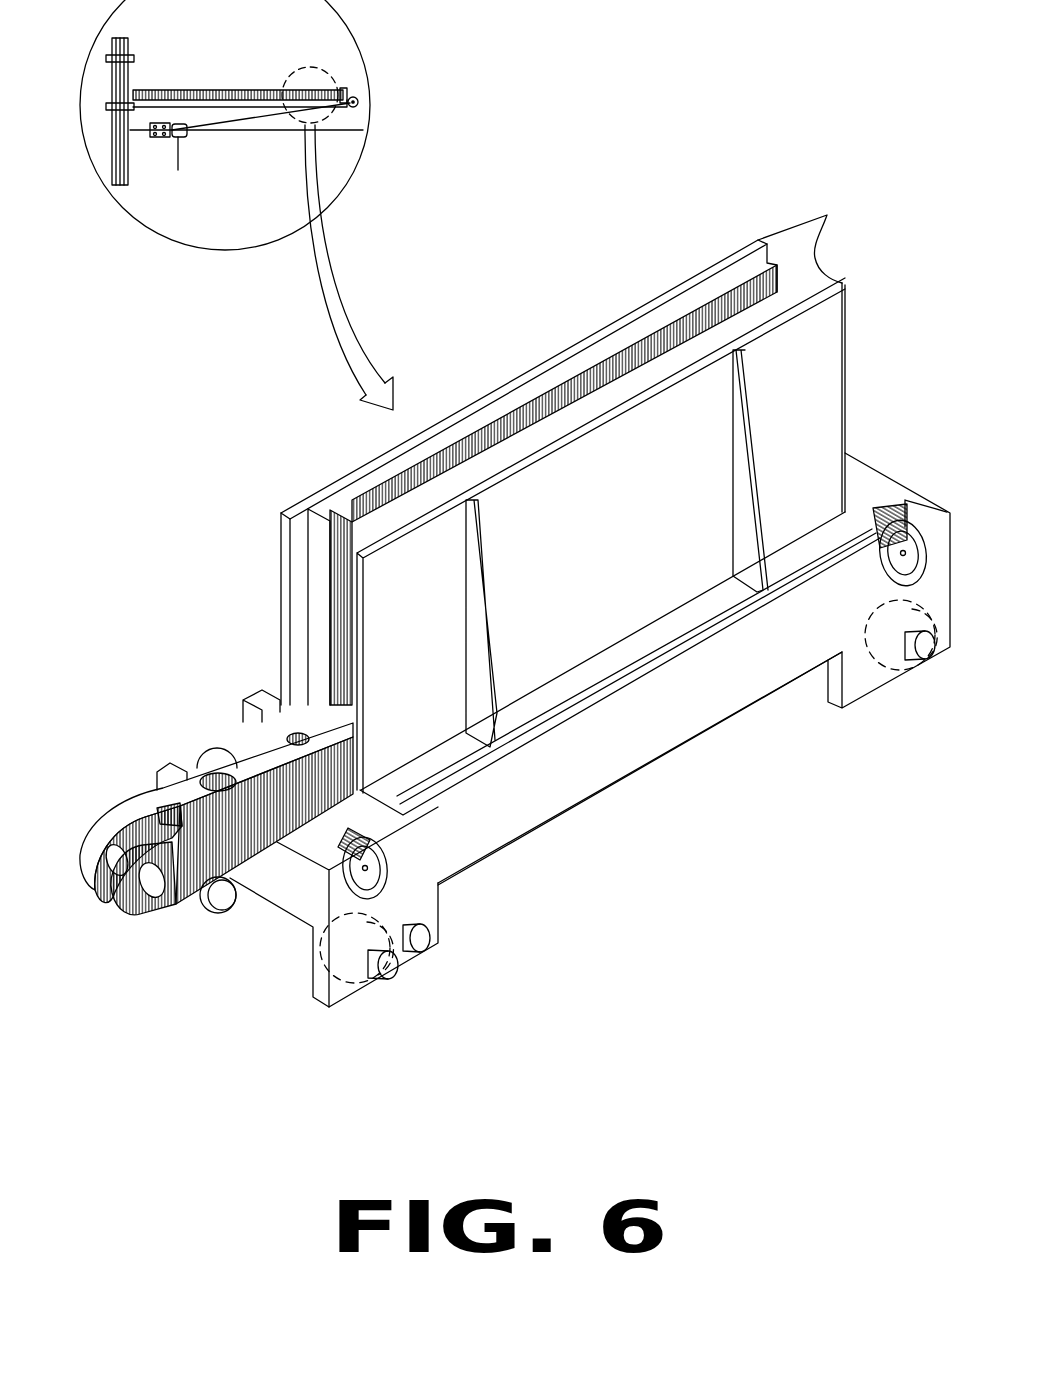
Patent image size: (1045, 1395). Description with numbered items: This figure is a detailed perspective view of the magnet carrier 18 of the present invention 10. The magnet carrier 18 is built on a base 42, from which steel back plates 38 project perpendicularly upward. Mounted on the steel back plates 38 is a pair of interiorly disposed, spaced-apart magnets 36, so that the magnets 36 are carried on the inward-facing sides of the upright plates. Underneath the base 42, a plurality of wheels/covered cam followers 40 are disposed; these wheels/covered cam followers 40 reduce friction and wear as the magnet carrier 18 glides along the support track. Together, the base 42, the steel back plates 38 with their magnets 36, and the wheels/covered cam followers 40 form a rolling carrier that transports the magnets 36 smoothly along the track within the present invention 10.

The present invention 10 is at (715, 130).
The magnet carrier 18 is at (625, 318).
The magnets 36 is at (507, 457).
The steel back plates 38 is at (816, 237).
The wheels/covered cam followers 40 is at (893, 557).
The base 42 is at (517, 840).